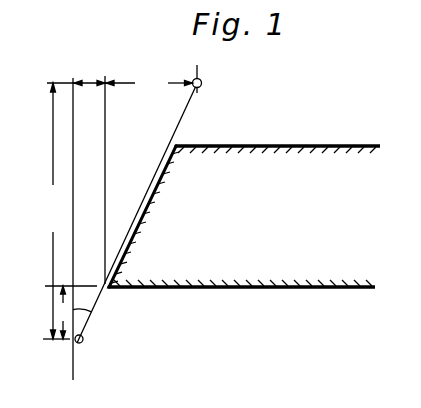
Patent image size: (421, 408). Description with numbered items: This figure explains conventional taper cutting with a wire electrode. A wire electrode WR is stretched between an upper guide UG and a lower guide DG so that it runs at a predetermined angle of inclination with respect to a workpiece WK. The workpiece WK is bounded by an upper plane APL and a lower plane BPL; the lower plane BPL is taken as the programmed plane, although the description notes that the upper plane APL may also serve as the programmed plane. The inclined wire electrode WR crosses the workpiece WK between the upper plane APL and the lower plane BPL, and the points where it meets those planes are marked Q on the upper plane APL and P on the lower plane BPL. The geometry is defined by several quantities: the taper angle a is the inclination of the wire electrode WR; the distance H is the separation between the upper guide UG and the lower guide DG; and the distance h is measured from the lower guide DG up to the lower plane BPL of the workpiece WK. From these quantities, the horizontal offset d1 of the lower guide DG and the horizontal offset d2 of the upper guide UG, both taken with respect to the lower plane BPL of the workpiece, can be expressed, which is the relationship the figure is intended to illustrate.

The workpiece WK is at (313, 162).
The upper plane APL is at (258, 144).
The lower plane BPL is at (213, 288).
The wire electrode WR is at (86, 299).
The upper guide UG is at (203, 83).
The lower guide DG is at (83, 342).
The upper edge point of cut surface Q is at (180, 144).
The lower edge point of cut surface P is at (108, 289).
The offset of the lower guide d1 is at (91, 76).
The offset of the upper guide d2 is at (149, 84).
The distance between the upper guide and lower guide H is at (50, 211).
The distance from the lower guide to the lower plane h is at (63, 312).
The taper angle a is at (82, 298).